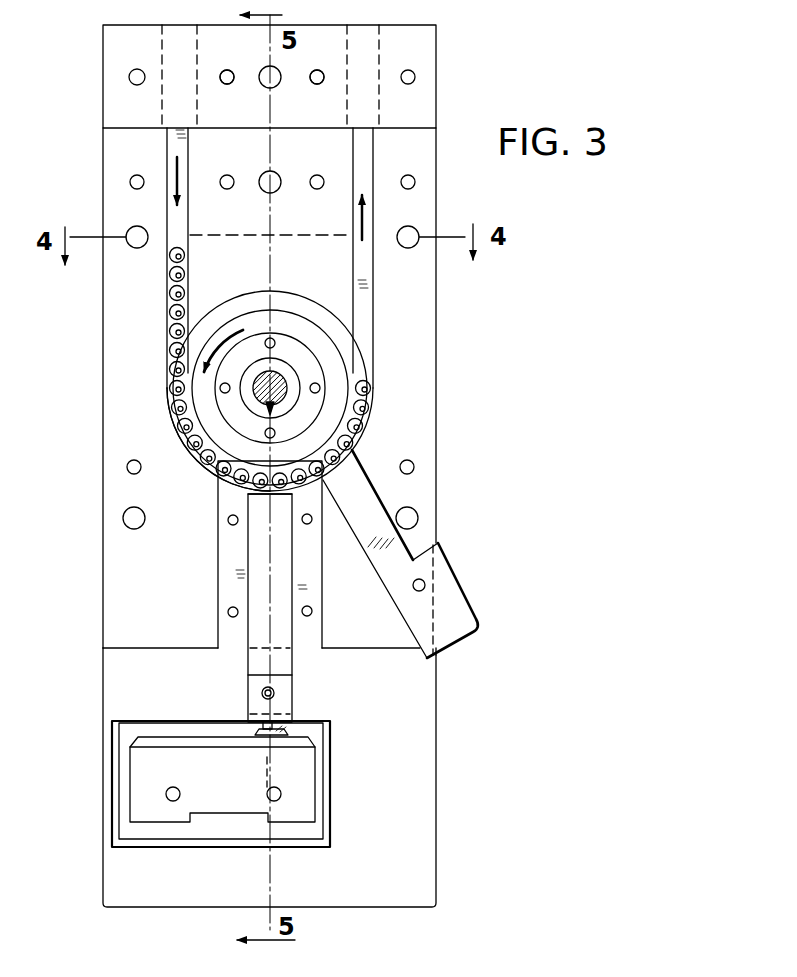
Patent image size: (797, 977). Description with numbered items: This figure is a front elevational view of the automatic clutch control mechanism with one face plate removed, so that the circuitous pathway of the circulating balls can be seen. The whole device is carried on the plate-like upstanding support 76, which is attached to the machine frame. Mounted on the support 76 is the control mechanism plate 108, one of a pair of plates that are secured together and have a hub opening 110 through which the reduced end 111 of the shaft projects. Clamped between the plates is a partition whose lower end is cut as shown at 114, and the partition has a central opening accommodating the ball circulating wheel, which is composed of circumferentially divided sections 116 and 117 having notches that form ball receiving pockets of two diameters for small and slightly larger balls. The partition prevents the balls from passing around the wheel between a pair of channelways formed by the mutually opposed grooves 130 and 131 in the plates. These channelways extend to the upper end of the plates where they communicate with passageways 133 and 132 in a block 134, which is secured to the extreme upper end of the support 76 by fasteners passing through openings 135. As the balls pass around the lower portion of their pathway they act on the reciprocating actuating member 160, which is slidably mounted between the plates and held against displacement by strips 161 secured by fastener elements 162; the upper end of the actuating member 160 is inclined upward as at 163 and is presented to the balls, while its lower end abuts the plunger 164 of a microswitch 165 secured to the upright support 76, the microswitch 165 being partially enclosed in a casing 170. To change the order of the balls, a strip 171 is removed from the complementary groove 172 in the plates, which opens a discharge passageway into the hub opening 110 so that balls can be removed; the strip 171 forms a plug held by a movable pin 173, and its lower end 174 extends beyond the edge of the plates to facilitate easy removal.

The upstanding support 76 is at (420, 708).
The control mechanism plate 108 is at (418, 347).
The hub opening 110 is at (363, 438).
The reduced end of shaft 111 is at (278, 368).
The cut lower end of partition 114 is at (250, 465).
The circulating wheel section 116 is at (351, 388).
The circulating wheel section 117 is at (330, 372).
The groove 130 is at (362, 310).
The groove 131 is at (177, 223).
The passageway 132 is at (162, 58).
The passageway 133 is at (385, 63).
The block 134 is at (123, 116).
The openings 135 is at (228, 77).
The reciprocating actuating member 160 is at (257, 662).
The strips 161 is at (232, 568).
The fastener elements 162 is at (233, 520).
The inclined end 163 is at (250, 494).
The plunger of microswitch 164 is at (278, 732).
The microswitch 165 is at (150, 778).
The casing 170 is at (113, 815).
The strip 171 is at (388, 545).
The groove 172 is at (382, 497).
The movable pin 173 is at (425, 583).
The lower end of plug 174 is at (460, 620).